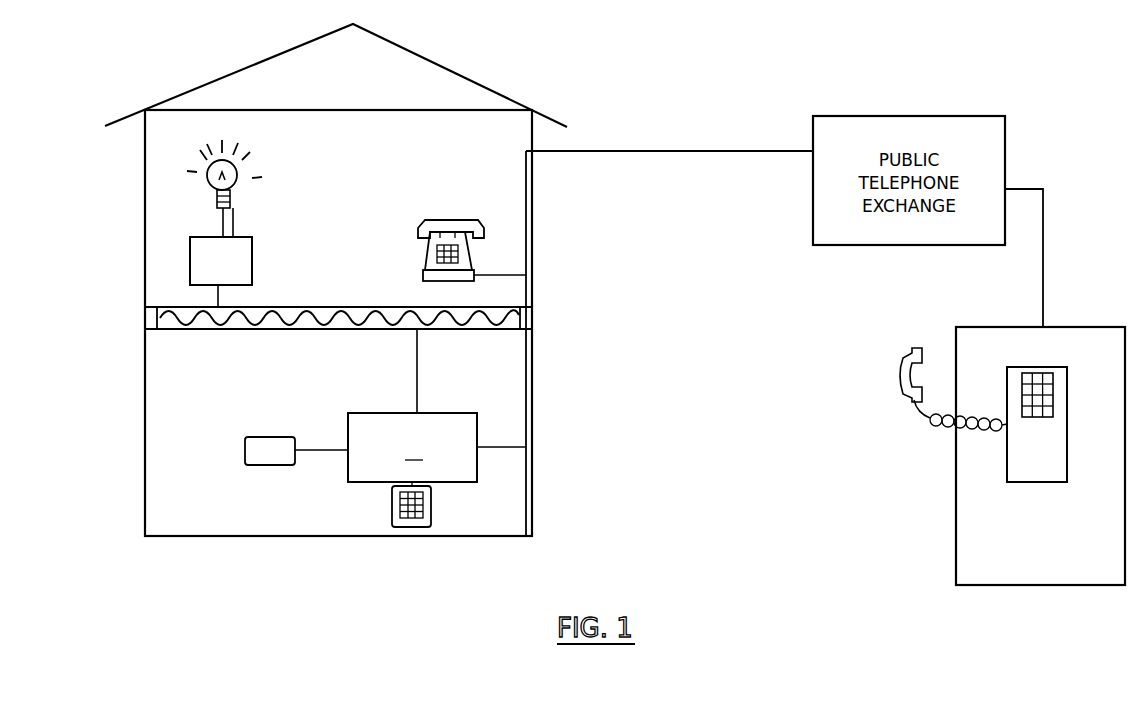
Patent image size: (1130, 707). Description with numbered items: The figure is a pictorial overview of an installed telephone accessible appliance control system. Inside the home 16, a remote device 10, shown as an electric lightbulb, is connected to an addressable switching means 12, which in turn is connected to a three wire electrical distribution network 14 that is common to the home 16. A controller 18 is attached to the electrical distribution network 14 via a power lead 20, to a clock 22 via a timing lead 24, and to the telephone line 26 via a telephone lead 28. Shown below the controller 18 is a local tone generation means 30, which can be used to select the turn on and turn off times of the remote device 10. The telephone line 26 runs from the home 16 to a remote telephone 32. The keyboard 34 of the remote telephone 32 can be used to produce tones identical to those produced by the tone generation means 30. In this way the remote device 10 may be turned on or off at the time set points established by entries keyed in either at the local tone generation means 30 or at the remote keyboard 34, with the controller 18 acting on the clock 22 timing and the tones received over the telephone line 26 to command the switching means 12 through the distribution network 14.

The remote device 10 is at (236, 180).
The addressable switching means 12 is at (252, 257).
The three wire electrical distribution network 14 is at (222, 293).
The home 16 is at (145, 270).
The controller 18 is at (412, 447).
The power lead 20 is at (418, 372).
The clock 22 is at (266, 433).
The timing lead 24 is at (320, 448).
The telephone line 26 is at (533, 366).
The telephone lead 28 is at (498, 445).
The local tone generation means 30 is at (432, 508).
The remote telephone 32 is at (1068, 458).
The keyboard 34 is at (1047, 377).